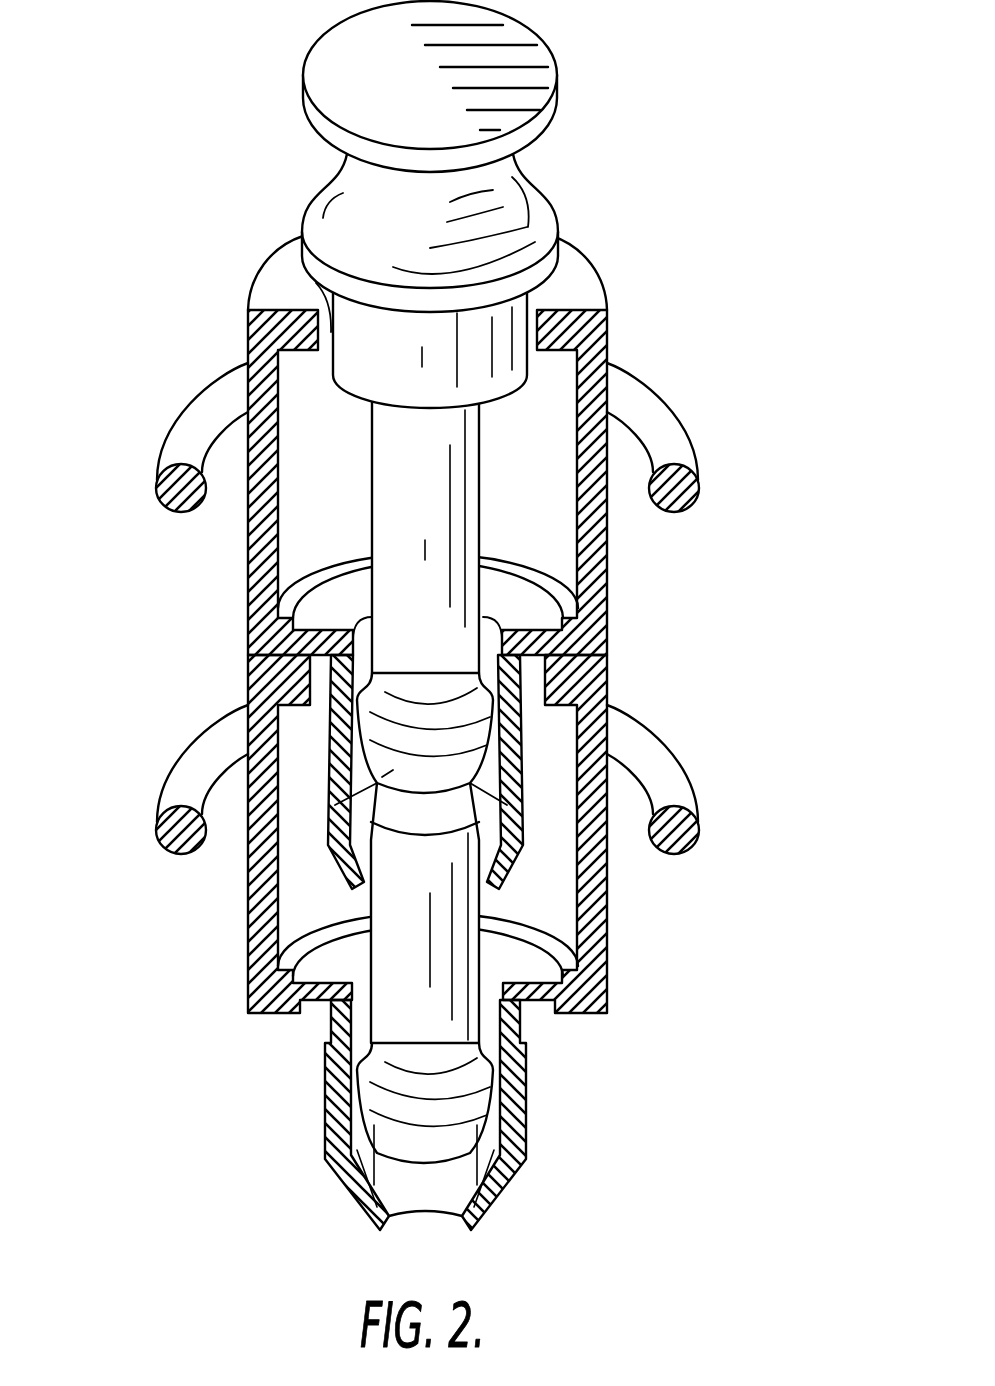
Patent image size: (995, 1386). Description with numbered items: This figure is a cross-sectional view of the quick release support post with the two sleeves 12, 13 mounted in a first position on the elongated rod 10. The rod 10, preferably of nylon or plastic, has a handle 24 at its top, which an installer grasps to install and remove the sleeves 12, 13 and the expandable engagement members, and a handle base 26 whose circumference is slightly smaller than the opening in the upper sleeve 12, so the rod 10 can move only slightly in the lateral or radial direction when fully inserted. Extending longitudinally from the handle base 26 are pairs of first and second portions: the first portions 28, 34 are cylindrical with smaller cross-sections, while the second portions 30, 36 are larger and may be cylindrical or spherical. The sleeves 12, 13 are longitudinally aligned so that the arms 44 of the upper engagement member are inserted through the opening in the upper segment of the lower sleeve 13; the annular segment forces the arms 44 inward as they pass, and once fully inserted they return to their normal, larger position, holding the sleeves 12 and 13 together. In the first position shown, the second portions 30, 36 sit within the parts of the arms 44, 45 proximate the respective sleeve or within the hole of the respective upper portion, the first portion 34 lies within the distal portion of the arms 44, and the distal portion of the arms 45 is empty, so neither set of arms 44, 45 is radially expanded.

The elongated rod 10 is at (631, 180).
The sleeve 12 is at (606, 551).
The sleeve 13 is at (603, 907).
The handle 24 is at (415, 233).
The handle base 26 is at (410, 377).
The first portion 28 is at (423, 472).
The second portion 30 is at (390, 773).
The first portion 34 is at (423, 955).
The second portion 36 is at (403, 1130).
The arms 44 is at (533, 793).
The arms 45 is at (522, 1130).